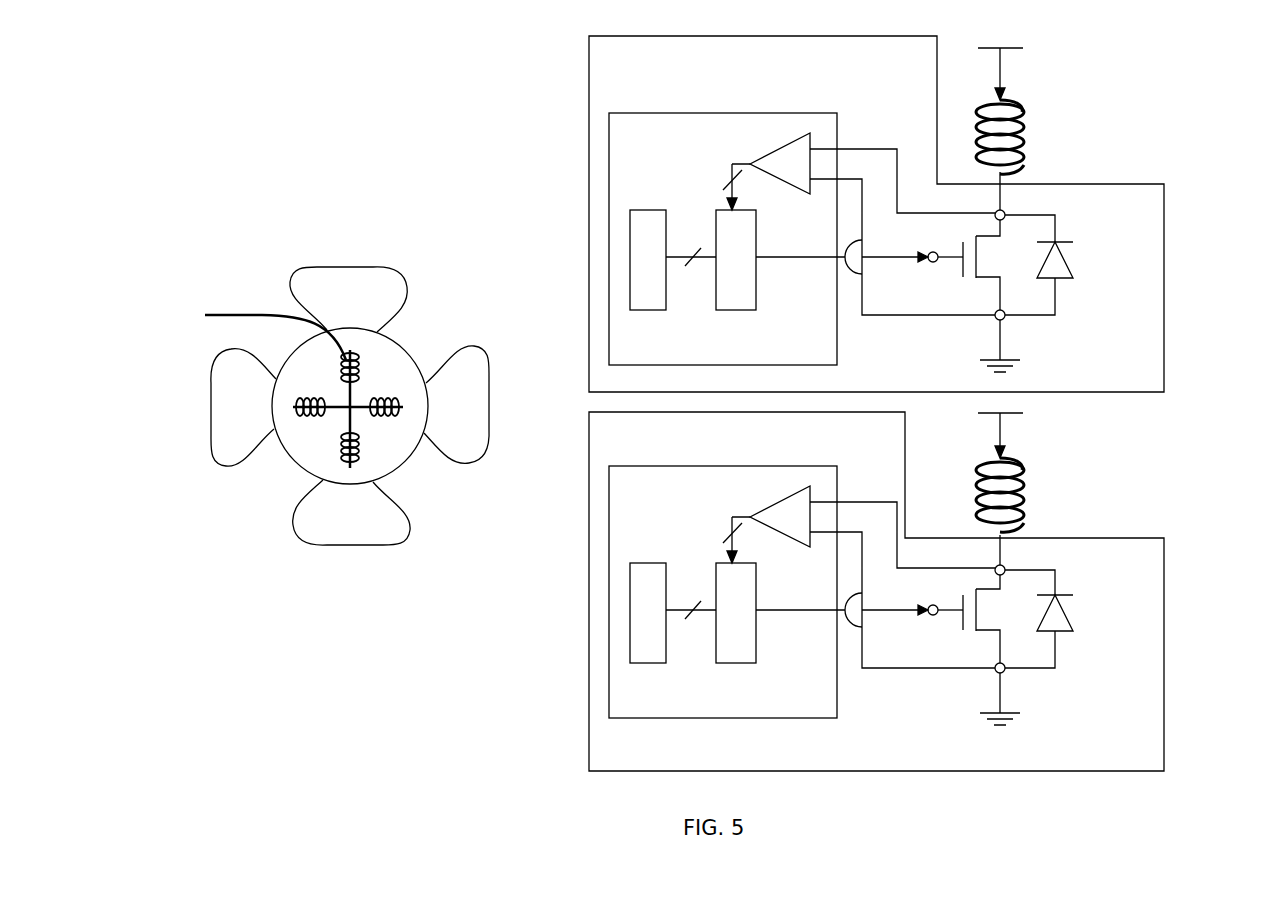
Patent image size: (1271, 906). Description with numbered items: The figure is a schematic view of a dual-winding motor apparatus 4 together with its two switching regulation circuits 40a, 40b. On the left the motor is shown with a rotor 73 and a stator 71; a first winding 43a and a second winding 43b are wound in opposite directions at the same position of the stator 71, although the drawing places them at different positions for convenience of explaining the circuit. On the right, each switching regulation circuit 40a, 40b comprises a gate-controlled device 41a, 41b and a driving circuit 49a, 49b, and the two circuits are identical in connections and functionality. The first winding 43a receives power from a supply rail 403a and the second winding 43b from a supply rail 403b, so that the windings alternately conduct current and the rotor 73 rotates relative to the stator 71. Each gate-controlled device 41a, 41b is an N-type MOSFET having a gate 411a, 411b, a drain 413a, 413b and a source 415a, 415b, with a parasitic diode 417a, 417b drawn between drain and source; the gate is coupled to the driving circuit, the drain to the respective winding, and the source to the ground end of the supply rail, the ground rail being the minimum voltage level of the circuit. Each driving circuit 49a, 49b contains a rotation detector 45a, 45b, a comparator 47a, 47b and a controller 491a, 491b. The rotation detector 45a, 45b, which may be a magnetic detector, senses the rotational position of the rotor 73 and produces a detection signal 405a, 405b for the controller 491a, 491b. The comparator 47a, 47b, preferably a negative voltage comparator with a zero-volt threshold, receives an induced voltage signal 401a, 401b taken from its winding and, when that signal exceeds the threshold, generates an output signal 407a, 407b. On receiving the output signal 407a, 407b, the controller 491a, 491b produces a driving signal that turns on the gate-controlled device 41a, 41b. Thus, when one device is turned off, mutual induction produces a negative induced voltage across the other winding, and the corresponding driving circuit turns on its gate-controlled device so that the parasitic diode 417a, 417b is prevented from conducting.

The dual-winding motor apparatus 4 is at (1137, 110).
The switching regulation circuit 40a is at (1175, 264).
The switching regulation circuit 40b is at (1175, 594).
The gate-controlled device 41a is at (960, 267).
The gate-controlled device 41b is at (960, 620).
The first winding 43a is at (1028, 134).
The second winding 43b is at (1028, 472).
The rotation detector 45a is at (640, 232).
The rotation detector 45b is at (640, 585).
The comparator 47a is at (790, 160).
The comparator 47b is at (790, 513).
The driving circuit 49a is at (609, 195).
The driving circuit 49b is at (609, 675).
The stator 71 is at (353, 415).
The rotor 73 is at (364, 307).
The induced voltage signal 401a is at (996, 190).
The induced voltage signal 401b is at (996, 545).
The supply rail 403a is at (1017, 48).
The supply rail 403b is at (1017, 413).
The detection signal 405a is at (694, 258).
The detection signal 405b is at (694, 611).
The output signal 407a is at (725, 185).
The output signal 407b is at (725, 538).
The gate 411a is at (920, 256).
The gate 411b is at (921, 609).
The drain 413a is at (1005, 215).
The drain 413b is at (1005, 570).
The source 415a is at (1005, 318).
The source 415b is at (1005, 671).
The parasitic diode 417a is at (1062, 262).
The parasitic diode 417b is at (1062, 616).
The controller 491a is at (736, 280).
The controller 491b is at (736, 633).